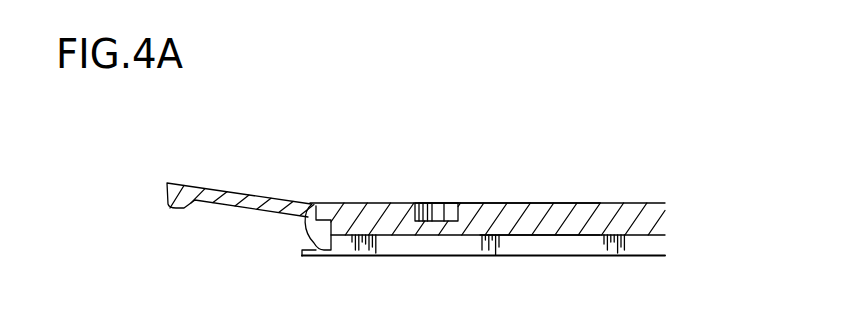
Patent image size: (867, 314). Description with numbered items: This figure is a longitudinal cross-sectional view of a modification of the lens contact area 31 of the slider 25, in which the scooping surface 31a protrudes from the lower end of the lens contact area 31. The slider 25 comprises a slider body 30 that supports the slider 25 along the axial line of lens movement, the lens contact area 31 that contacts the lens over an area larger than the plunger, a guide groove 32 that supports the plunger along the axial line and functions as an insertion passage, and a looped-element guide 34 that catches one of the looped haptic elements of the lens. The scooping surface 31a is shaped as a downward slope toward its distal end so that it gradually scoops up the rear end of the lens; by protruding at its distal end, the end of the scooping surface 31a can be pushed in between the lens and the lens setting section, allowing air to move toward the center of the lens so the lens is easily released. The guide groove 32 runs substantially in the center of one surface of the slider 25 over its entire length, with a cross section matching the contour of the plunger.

The slider 25 is at (518, 204).
The slider body 30 is at (604, 203).
The lens contact area 31 is at (308, 202).
The scooping surface 31a is at (303, 248).
The guide groove 32 is at (532, 236).
The looped-element guide 34 is at (438, 208).